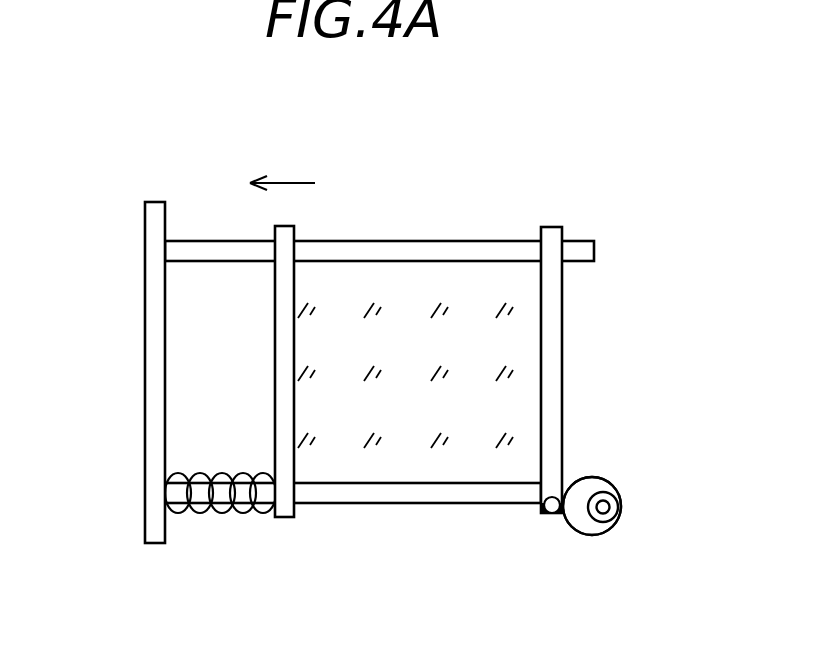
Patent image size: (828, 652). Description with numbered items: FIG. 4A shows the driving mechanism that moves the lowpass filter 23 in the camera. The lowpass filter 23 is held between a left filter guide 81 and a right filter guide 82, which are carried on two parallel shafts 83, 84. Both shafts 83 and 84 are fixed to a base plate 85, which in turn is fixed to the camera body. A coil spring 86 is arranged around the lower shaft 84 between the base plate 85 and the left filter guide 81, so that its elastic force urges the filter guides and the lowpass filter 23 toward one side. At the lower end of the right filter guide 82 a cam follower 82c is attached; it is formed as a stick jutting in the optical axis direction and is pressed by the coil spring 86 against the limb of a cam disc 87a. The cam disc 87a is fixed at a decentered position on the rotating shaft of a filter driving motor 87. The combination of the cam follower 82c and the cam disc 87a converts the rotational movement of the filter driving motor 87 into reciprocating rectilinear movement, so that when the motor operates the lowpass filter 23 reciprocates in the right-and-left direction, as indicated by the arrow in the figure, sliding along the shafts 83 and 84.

The lowpass filter 23 is at (530, 370).
The left filter guide 81 is at (294, 236).
The right filter guide 82 is at (553, 227).
The cam follower 82c is at (544, 511).
The shaft 83 is at (593, 243).
The shaft 84 is at (423, 502).
The base plate 85 is at (145, 240).
The coil spring 86 is at (228, 514).
The filter driving motor 87 is at (617, 518).
The cam disc 87a is at (610, 481).